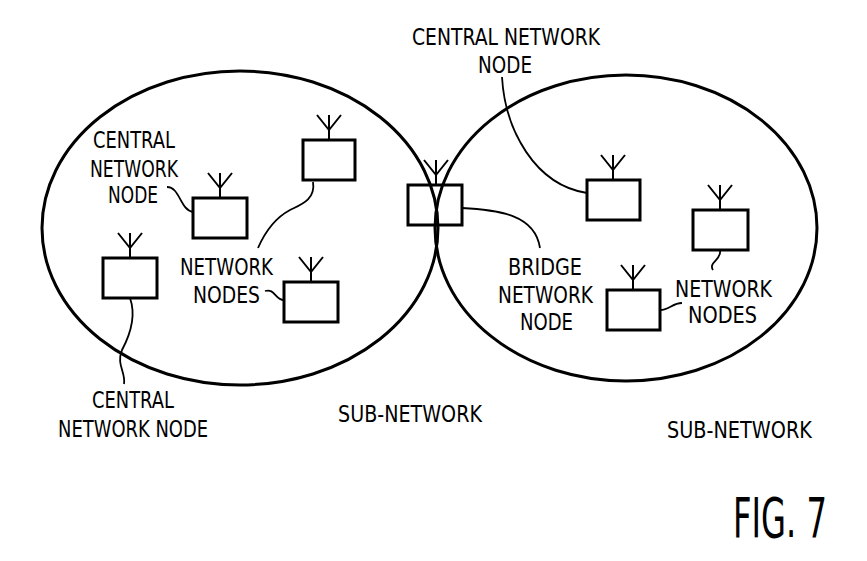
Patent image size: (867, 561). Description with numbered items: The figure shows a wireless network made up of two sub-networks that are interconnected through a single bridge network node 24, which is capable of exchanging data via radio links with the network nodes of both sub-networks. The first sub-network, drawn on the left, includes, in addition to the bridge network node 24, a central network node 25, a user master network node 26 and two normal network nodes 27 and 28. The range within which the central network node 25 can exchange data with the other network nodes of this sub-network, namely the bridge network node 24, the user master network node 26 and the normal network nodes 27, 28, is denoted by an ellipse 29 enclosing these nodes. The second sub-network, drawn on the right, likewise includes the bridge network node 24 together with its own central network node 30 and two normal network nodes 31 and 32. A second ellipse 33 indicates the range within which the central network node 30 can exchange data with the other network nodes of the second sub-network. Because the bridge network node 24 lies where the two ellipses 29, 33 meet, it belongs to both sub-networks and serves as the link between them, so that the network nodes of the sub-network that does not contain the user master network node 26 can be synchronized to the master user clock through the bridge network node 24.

The bridge network node 24 is at (452, 215).
The central network node 25 is at (237, 208).
The user master network node 26 is at (113, 272).
The normal network node 27 is at (328, 168).
The normal network node 28 is at (302, 312).
The ellipse 29 is at (360, 352).
The central network node 30 is at (630, 193).
The normal network node 31 is at (736, 222).
The normal network node 32 is at (625, 318).
The ellipse 33 is at (687, 370).